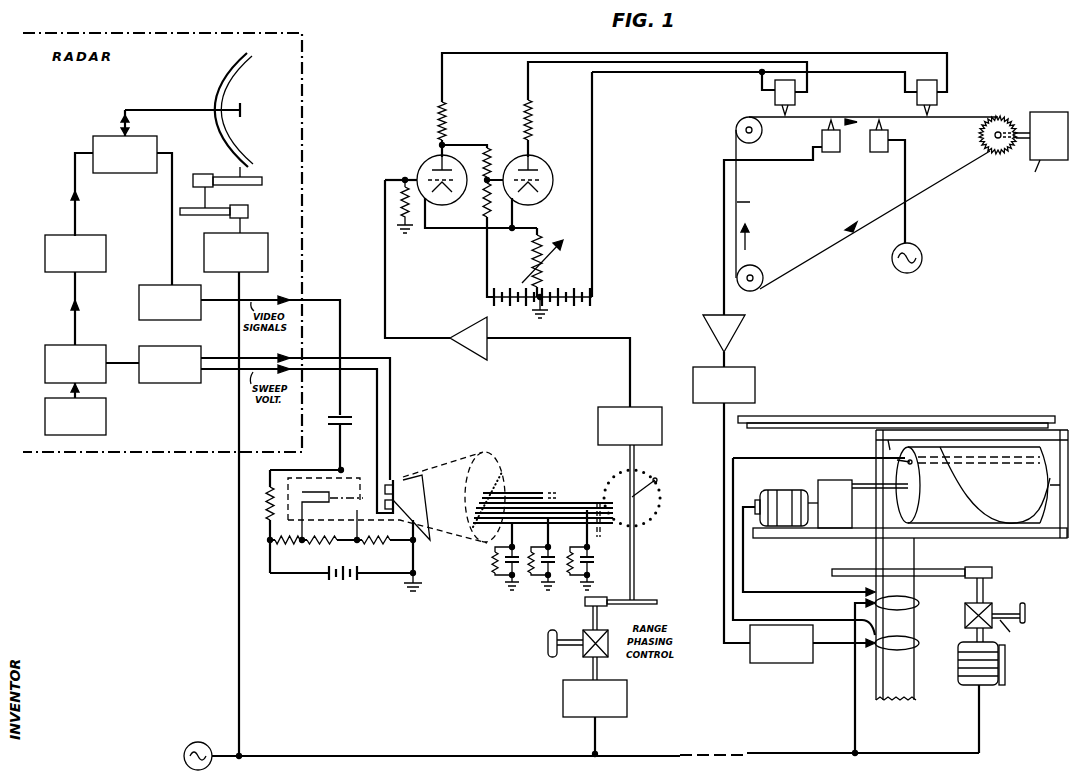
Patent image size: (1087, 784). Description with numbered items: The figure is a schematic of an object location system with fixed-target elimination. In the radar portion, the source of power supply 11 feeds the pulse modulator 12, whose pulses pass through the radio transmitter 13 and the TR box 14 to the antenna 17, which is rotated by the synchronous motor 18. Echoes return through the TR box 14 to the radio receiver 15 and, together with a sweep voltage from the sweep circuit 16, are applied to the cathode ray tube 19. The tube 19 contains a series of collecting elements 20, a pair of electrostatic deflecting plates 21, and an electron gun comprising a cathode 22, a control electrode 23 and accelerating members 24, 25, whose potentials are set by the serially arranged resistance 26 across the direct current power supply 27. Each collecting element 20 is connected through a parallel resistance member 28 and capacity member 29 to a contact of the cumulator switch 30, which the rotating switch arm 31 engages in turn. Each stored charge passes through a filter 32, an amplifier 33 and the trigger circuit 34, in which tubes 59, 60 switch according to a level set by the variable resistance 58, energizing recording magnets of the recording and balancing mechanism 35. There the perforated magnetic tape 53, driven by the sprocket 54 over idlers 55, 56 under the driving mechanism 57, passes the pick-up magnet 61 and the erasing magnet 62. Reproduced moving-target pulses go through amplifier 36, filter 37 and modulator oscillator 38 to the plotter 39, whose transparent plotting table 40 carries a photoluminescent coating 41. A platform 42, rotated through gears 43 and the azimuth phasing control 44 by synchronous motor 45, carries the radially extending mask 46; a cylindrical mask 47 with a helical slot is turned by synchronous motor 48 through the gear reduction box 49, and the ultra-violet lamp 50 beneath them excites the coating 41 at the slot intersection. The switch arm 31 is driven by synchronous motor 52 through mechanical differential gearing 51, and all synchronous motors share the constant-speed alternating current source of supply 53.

The source of power supply 11 is at (106, 425).
The pulse modulator 12 is at (97, 345).
The radio transmitter 13 is at (90, 235).
The TR box 14 is at (112, 173).
The radio receiver 15 is at (158, 284).
The sweep circuit 16 is at (176, 346).
The antenna 17 is at (228, 97).
The synchronous motor 18 is at (261, 233).
The cathode ray tube 19 is at (445, 465).
The collecting elements 20 is at (505, 478).
The electrostatic deflecting plates 21 is at (392, 485).
The cathode 22 is at (326, 477).
The control electrode 23 is at (340, 490).
The accelerating member 24 is at (368, 525).
The accelerating member 25 is at (420, 517).
The serially arranged resistance 26 is at (290, 545).
The direct current power supply 27 is at (338, 588).
The resistance member 28 is at (487, 565).
The capacity member 29 is at (503, 580).
The cumulator switch 30 is at (636, 522).
The rotating switch arm 31 is at (642, 492).
The filter 32 is at (662, 428).
The amplifier 33 is at (488, 350).
The trigger circuit 34 is at (492, 103).
The recording and balancing mechanism 35 is at (865, 93).
The amplifier 36 is at (742, 328).
The filter 37 is at (755, 376).
The modulator oscillator 38 is at (768, 665).
The plotter 39 is at (917, 407).
The transparent plotting table 40 is at (1033, 409).
The photoluminescent coating 41 is at (803, 410).
The platform 42 is at (788, 540).
The gears 43 is at (992, 574).
The azimuth phasing control 44 is at (992, 602).
The synchronous motor 45 is at (992, 678).
The radially extending mask 46 is at (888, 432).
The cylindrical mask 47 is at (950, 520).
The synchronous motor 48 is at (780, 488).
The gear reduction box 49 is at (820, 480).
The ultra-violet lamp 50 is at (905, 468).
The mechanical differential gearing 51 is at (549, 652).
The synchronous motor 52 is at (628, 697).
The source of supply / magnetic tape 53 is at (812, 260).
The sprocket 54 is at (1003, 117).
The idler 55 is at (750, 265).
The idler 56 is at (758, 138).
The driving mechanism 57 is at (1043, 112).
The variable resistance 58 is at (541, 275).
The tube 59 is at (547, 162).
The tube 60 is at (425, 162).
The pick-up magnet 61 is at (822, 137).
The erasing magnet 62 is at (888, 137).